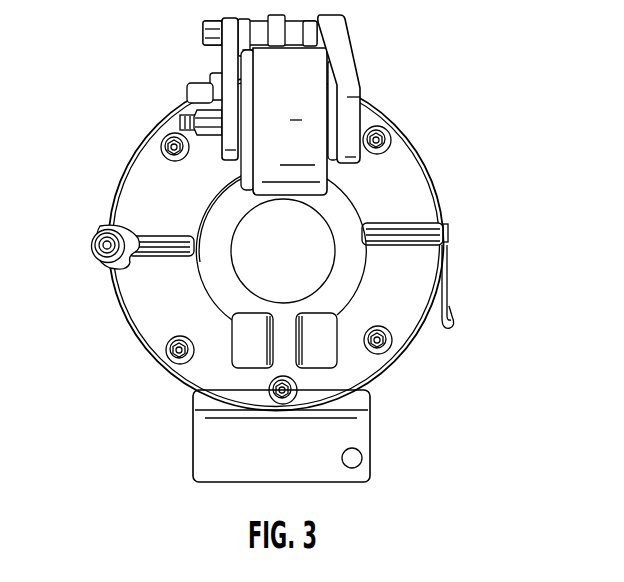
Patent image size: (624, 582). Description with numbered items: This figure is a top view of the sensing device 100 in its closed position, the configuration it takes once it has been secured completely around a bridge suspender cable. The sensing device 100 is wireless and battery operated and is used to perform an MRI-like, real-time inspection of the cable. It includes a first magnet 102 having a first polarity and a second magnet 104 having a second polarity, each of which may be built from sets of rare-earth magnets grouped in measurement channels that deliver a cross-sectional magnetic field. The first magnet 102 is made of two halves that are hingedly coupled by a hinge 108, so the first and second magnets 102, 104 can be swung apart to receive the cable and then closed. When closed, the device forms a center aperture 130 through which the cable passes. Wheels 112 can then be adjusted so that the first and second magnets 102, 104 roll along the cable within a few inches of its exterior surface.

The sensing device 100 is at (519, 122).
The first magnet 102 is at (145, 187).
The second magnet 104 is at (318, 222).
The hinge 108 is at (93, 247).
The wheels 112 is at (316, 82).
The center aperture 130 is at (288, 262).